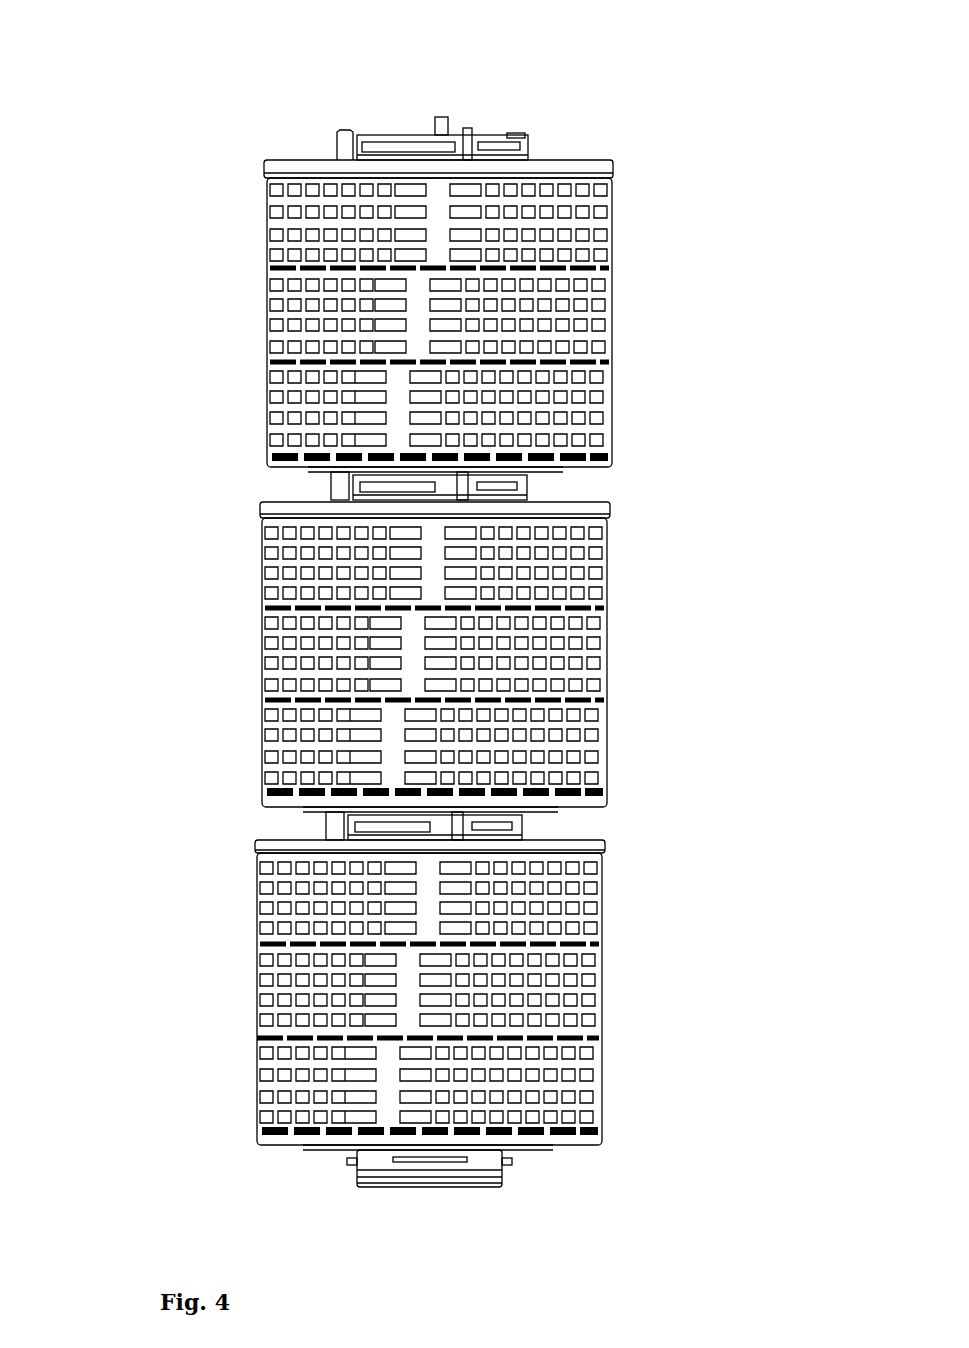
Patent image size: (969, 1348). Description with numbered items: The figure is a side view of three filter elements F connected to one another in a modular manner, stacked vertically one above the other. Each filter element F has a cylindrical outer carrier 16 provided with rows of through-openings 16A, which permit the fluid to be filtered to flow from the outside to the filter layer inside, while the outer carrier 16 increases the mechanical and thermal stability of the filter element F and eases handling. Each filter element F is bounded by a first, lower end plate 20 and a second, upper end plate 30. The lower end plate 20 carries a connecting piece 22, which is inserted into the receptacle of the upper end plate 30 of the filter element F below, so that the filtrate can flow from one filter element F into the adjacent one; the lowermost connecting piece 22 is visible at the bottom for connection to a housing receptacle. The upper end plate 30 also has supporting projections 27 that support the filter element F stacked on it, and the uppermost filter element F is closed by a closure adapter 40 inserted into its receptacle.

The outer carrier 16 is at (326, 315).
The through-openings 16A is at (267, 305).
The first end plate 20 is at (419, 695).
The connecting piece 22 is at (498, 1188).
The supporting projections 27 is at (345, 140).
The second end plate 30 is at (598, 158).
The closure adapter 40 is at (437, 117).
The filter element F is at (615, 240).